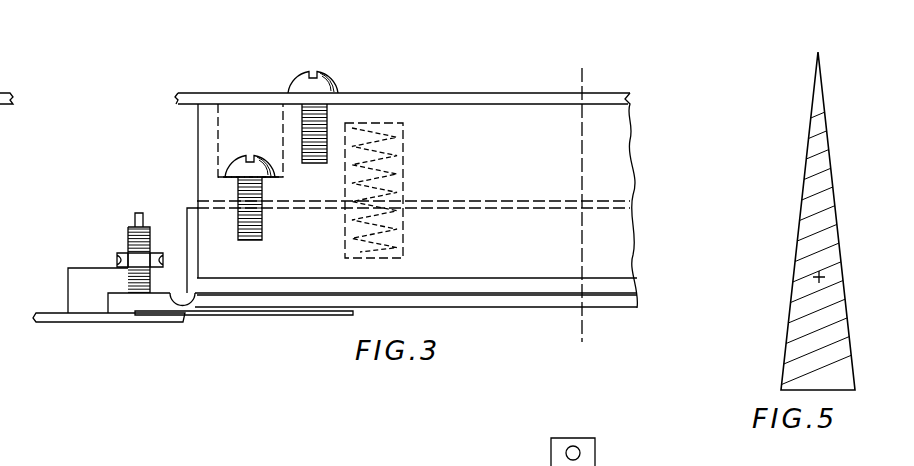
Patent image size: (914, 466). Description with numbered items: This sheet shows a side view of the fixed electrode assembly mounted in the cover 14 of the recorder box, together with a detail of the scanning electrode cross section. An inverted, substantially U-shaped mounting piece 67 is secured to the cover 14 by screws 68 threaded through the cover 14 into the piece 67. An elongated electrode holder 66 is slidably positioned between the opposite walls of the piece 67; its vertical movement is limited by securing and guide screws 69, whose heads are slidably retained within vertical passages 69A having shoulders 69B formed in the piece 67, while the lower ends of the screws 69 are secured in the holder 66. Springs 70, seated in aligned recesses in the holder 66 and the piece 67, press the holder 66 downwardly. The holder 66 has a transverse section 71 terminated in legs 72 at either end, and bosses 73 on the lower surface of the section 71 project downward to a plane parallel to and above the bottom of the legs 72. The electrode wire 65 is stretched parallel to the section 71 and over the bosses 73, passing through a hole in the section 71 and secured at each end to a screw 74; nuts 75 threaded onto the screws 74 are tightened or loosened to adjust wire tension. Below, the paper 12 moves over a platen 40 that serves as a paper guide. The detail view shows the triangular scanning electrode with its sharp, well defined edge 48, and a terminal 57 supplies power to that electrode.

In FIG. 3, the paper 12 is at (270, 315).
In FIG. 3, the cover 14 is at (470, 93).
In FIG. 3, the platen 40 is at (163, 322).
In FIG. 5, the edge 48 is at (822, 52).
In FIG. 3, the terminal 57 is at (579, 447).
In FIG. 3, the electrode wire 65 is at (505, 307).
In FIG. 3, the electrode holder 66 is at (180, 278).
In FIG. 3, the mounting piece 67 is at (197, 132).
In FIG. 3, the screw 68 is at (340, 92).
In FIG. 3, the securing and guide screw 69 is at (240, 153).
In FIG. 3, the vertical passage 69A is at (283, 165).
In FIG. 3, the shoulder 69B is at (280, 188).
In FIG. 3, the spring 70 is at (402, 157).
In FIG. 3, the transverse section 71 is at (399, 290).
In FIG. 3, the leg 72 is at (75, 293).
In FIG. 3, the boss 73 is at (184, 300).
In FIG. 3, the screw 74 is at (130, 226).
In FIG. 3, the nut 75 is at (117, 260).